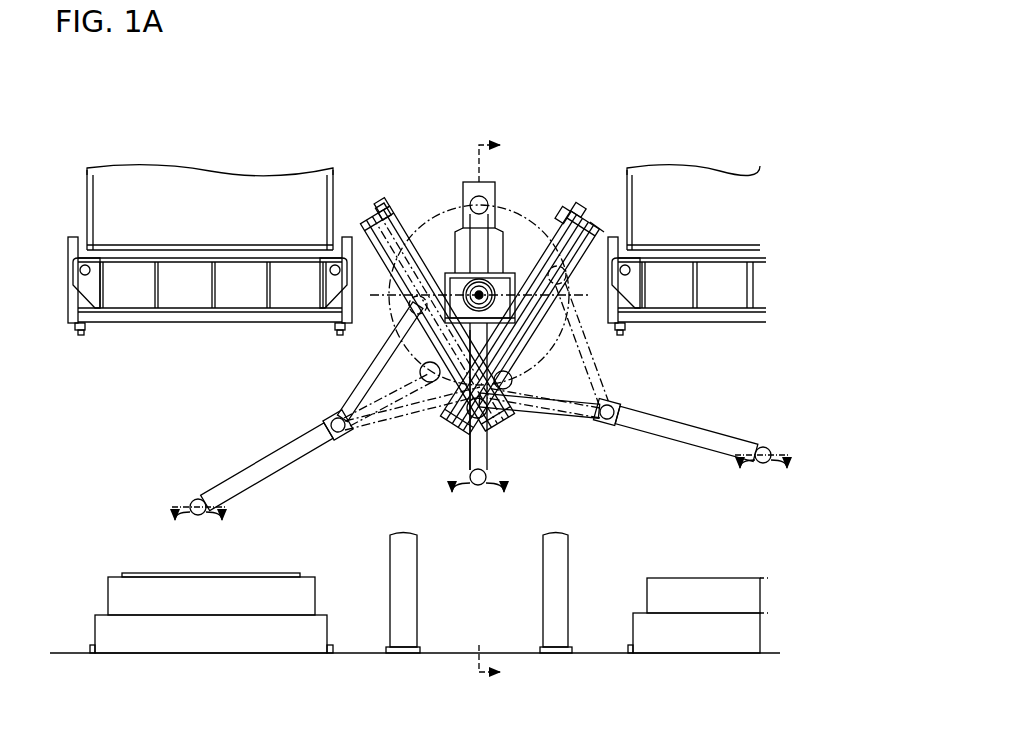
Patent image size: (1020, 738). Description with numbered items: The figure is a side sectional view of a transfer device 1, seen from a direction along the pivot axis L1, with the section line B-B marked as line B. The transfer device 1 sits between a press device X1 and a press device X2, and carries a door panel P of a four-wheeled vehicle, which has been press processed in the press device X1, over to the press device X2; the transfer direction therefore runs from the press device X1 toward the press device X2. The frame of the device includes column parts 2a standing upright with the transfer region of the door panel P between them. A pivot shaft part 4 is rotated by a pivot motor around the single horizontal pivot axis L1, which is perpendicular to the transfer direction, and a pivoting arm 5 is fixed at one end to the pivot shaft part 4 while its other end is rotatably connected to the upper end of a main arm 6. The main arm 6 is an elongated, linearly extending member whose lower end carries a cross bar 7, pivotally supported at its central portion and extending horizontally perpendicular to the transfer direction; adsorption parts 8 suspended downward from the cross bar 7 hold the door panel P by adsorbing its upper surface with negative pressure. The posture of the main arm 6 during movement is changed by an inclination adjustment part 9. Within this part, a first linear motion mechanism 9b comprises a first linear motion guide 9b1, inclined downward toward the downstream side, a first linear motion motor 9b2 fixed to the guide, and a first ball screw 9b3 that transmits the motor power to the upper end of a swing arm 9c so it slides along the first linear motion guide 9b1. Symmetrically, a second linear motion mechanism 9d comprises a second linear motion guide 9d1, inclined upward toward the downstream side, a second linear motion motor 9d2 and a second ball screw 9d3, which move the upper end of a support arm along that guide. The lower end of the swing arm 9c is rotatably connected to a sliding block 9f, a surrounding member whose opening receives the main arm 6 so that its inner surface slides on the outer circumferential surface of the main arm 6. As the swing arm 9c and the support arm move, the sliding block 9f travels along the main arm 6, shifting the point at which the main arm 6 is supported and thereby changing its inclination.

The transfer device 1 is at (560, 100).
The column parts 2a is at (417, 592).
The pivot shaft part 4 is at (500, 275).
The pivoting arm 5 is at (473, 222).
The main arm 6 is at (490, 452).
The cross bar 7 is at (482, 486).
The adsorption part 8 is at (506, 496).
The inclination adjustment part 9 is at (590, 200).
The first linear motion mechanism 9b is at (365, 200).
The first linear motion guide 9b1 is at (375, 290).
The first linear motion motor 9b2 is at (386, 203).
The first ball screw 9b3 is at (378, 212).
The swing arm 9c is at (372, 362).
The second linear motion mechanism 9d is at (602, 200).
The second linear motion guide 9d1 is at (585, 290).
The second linear motion motor 9d2 is at (560, 210).
The second ball screw 9d3 is at (592, 220).
The sliding block 9f is at (326, 420).
The pivot axis L1 is at (450, 232).
The door panel P is at (283, 572).
The press device X1 is at (213, 150).
The press device X2 is at (732, 150).
The line B- B is at (488, 411).